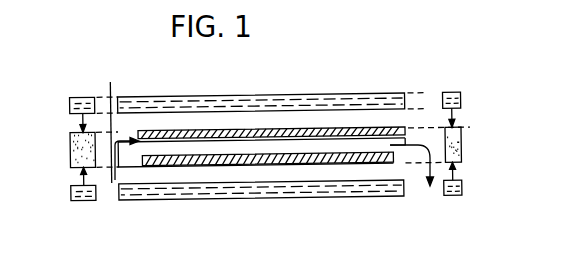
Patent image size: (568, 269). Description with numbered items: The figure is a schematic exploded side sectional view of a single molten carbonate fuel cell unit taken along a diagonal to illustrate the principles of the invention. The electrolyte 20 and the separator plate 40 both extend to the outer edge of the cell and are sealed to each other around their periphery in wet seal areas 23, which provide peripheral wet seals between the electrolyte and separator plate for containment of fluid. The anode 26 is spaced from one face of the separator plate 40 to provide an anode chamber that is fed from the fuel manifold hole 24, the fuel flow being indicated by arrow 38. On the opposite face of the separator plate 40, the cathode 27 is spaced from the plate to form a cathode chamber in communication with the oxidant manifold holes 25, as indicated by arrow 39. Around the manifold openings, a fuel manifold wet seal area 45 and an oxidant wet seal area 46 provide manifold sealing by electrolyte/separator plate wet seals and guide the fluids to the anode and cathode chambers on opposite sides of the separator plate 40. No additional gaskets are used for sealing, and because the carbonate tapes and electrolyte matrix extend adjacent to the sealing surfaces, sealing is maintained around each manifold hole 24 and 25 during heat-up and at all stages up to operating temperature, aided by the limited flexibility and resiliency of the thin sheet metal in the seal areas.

The electrolyte 20 is at (228, 95).
The wet seal areas 23 is at (72, 130).
The fuel manifold hole 24 is at (100, 96).
The oxidant manifold holes 25 is at (436, 92).
The anode 26 is at (283, 129).
The cathode 27 is at (352, 165).
The arrow 38 is at (111, 82).
The arrow 39 is at (430, 172).
The separator plate 40 is at (72, 150).
The fuel manifold wet seal area 45 is at (115, 180).
The oxidant wet seal area 46 is at (404, 128).